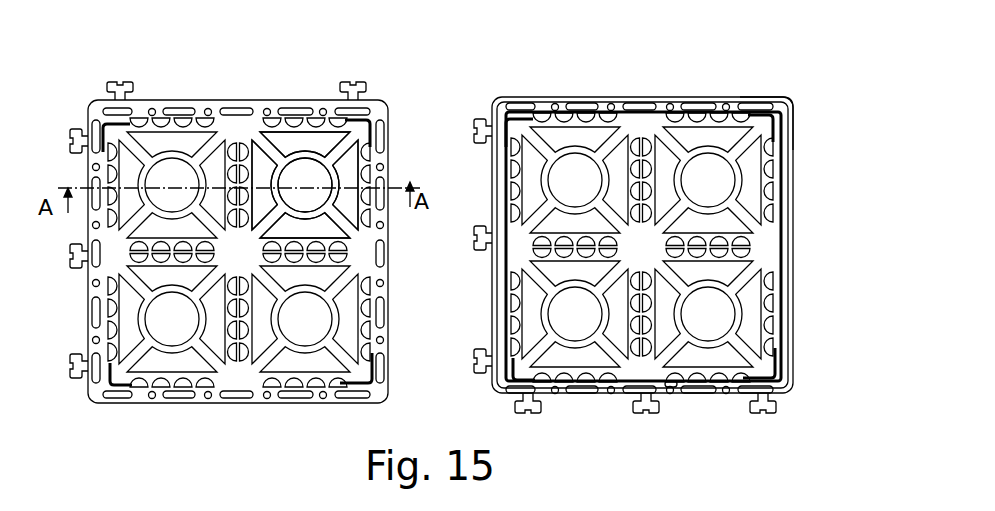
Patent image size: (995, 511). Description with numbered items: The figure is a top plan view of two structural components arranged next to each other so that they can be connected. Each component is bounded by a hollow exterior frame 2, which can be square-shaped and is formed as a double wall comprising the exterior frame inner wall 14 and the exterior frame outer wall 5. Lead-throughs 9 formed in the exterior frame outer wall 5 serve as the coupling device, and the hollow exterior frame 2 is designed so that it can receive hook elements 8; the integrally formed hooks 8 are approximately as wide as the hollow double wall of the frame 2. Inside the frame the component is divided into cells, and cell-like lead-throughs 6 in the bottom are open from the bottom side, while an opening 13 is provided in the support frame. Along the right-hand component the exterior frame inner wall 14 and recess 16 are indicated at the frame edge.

The hollow exterior frame 2 is at (672, 85).
The exterior frame outer wall 5 is at (792, 98).
The cell-like lead-throughs 6 is at (350, 177).
The hook 8 is at (72, 134).
The lead-throughs 9 is at (526, 98).
The opening 13 is at (683, 385).
The exterior frame inner wall 14 is at (787, 210).
The recess 16 is at (787, 177).